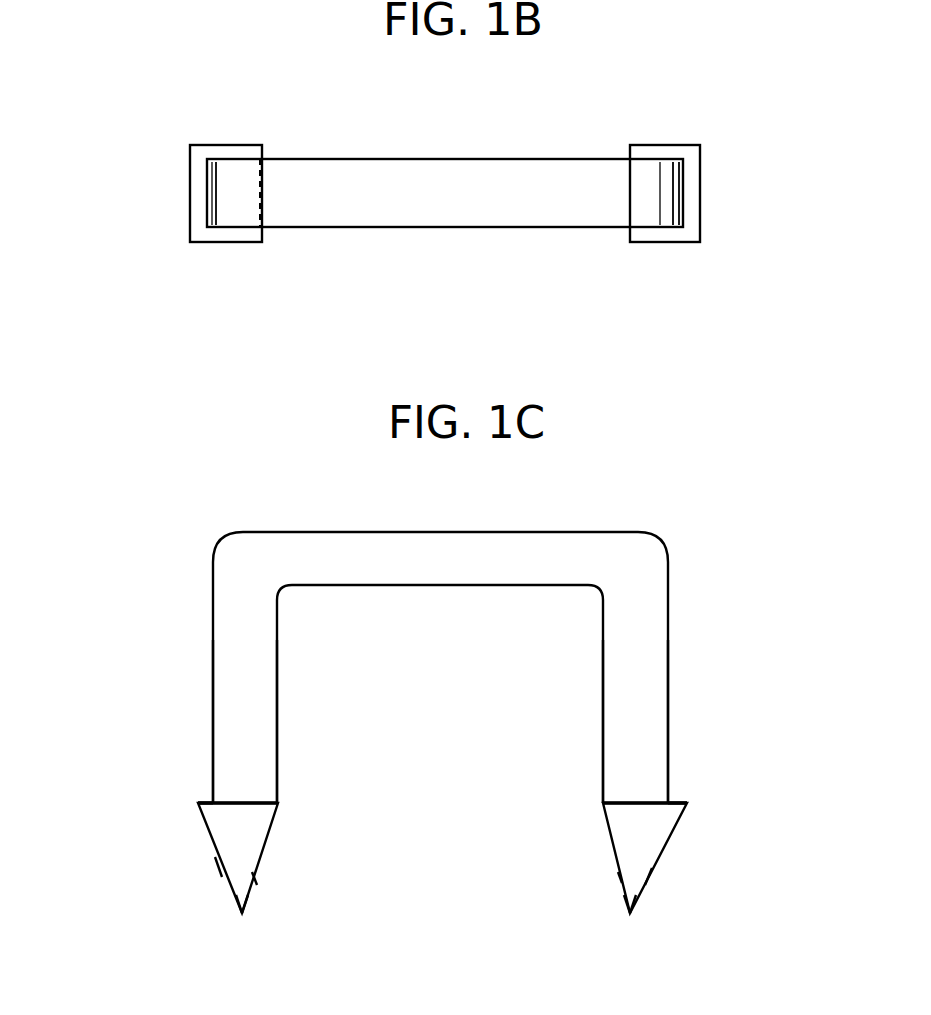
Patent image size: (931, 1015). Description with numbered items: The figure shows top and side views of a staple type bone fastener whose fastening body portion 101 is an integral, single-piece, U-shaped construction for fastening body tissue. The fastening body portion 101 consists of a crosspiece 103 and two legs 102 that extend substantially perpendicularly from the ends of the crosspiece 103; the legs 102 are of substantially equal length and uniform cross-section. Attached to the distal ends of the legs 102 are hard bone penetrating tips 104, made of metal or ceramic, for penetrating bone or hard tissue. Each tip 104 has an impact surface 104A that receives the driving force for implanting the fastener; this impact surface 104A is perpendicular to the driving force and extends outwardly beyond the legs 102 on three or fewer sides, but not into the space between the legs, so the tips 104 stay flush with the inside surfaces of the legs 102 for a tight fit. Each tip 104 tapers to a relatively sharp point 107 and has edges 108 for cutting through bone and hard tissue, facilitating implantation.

In FIG. 1C, the fastening body portion 101 is at (170, 577).
In FIG. 1C, the legs 102 is at (277, 660).
In FIG. 1B, the crosspiece 103 is at (458, 210).
In FIG. 1C, the crosspiece 103 is at (385, 530).
In FIG. 1B, the tips 104 is at (250, 130).
In FIG. 1C, the tips 104 is at (252, 828).
In FIG. 1B, the impact surface 104A is at (202, 225).
In FIG. 1C, the impact surface 104A is at (205, 800).
In FIG. 1C, the sharp point 107 is at (242, 913).
In FIG. 1C, the edges 108 is at (252, 872).